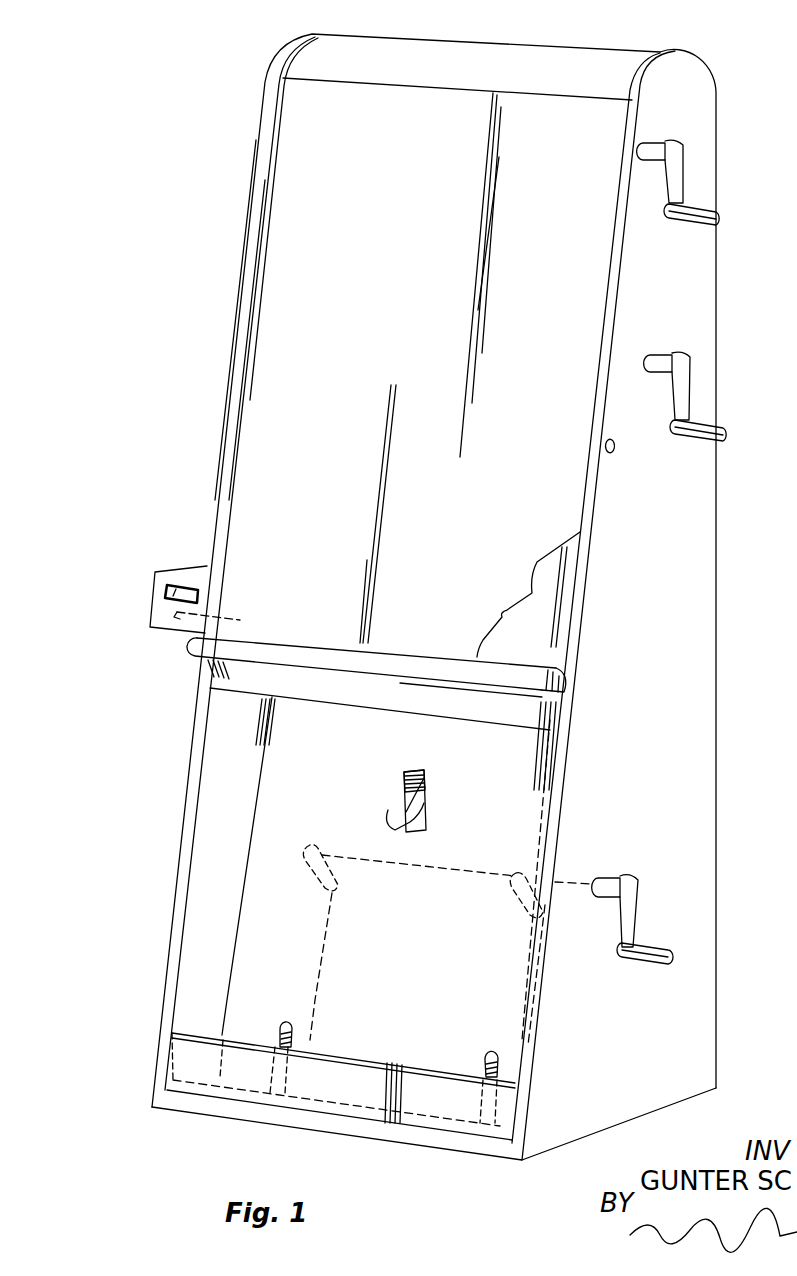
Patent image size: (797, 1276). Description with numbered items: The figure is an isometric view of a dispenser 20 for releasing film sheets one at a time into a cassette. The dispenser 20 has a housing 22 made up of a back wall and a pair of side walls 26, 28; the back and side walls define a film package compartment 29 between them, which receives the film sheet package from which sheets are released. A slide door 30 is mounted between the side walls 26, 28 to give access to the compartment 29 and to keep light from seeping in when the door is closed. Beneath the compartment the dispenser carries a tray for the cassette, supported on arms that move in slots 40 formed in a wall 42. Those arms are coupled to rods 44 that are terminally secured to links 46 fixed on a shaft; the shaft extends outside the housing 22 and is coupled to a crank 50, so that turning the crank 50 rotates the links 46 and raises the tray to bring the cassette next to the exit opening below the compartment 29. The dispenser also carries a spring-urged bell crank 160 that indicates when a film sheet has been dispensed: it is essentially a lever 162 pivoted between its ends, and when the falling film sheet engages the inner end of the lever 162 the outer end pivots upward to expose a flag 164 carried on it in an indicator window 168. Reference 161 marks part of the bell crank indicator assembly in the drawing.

The dispenser 20 is at (737, 50).
The housing 22 is at (247, 289).
The side wall 26 is at (231, 389).
The side wall 28 is at (668, 562).
The film package compartment 29 is at (552, 638).
The slide door 30 is at (428, 372).
The slots 40 is at (290, 1020).
The wall 42 is at (430, 992).
The rods 44 is at (322, 960).
The links 46 is at (340, 888).
The crank 50 is at (650, 947).
The bell crank 160 is at (406, 785).
The hook mounting 161 is at (416, 772).
The lever 162 is at (238, 612).
The flag 164 is at (174, 616).
The indicator window 168 is at (175, 592).